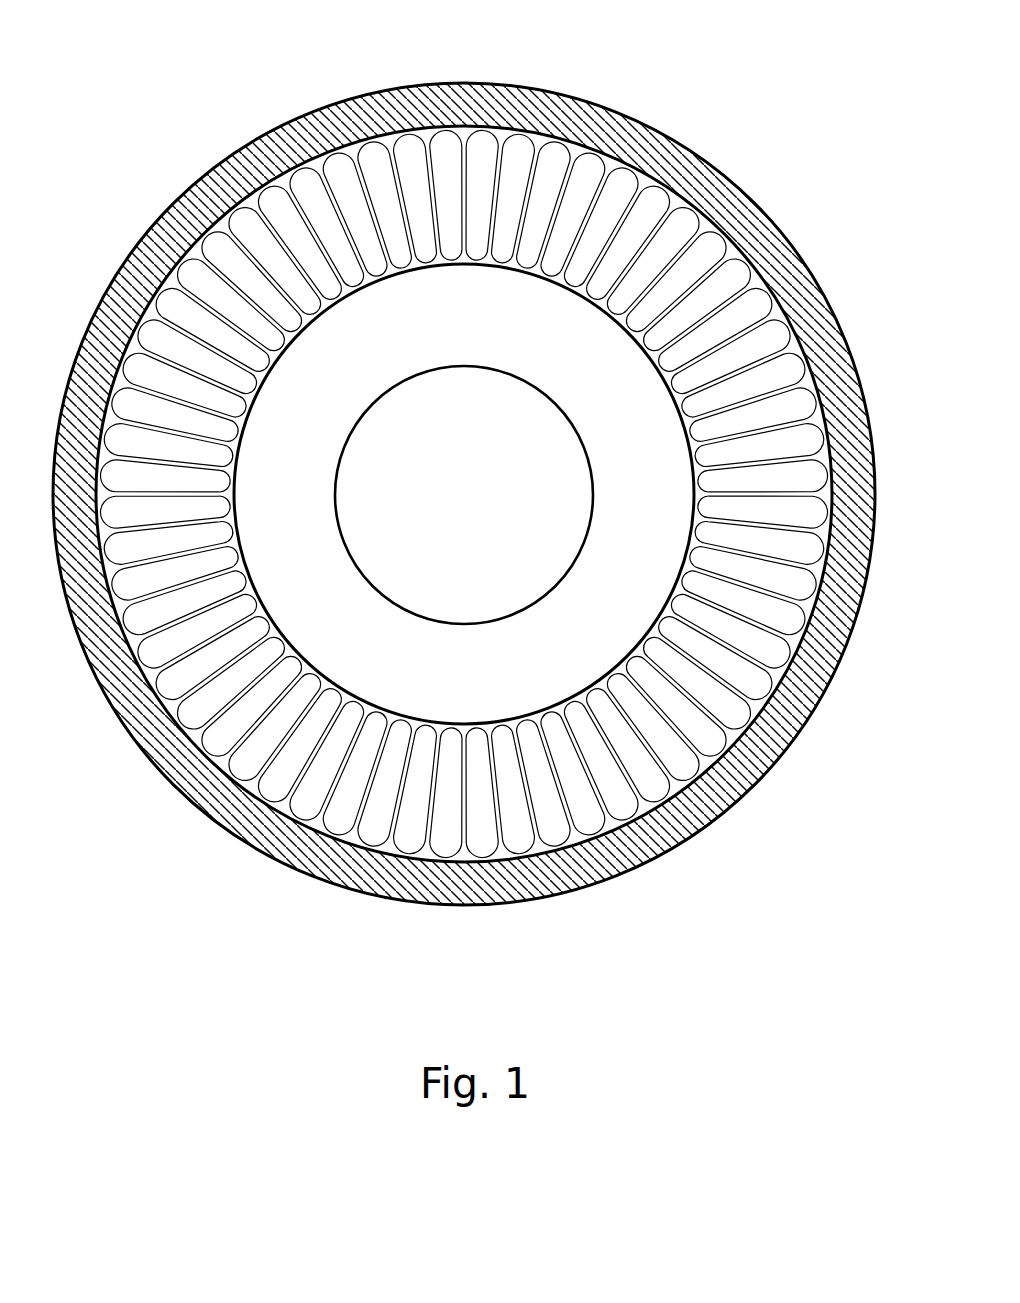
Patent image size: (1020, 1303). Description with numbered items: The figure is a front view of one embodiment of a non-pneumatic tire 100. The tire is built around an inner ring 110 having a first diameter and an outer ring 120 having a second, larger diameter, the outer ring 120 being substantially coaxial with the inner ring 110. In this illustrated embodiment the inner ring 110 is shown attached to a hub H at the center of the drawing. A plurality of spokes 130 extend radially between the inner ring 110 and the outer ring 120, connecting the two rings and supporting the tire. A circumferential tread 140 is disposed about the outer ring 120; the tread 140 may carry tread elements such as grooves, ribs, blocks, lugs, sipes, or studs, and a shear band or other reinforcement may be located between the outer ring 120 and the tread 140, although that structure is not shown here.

The non-pneumatic tire 100 is at (772, 120).
The inner ring 110 is at (361, 278).
The outer ring 120 is at (497, 122).
The spokes 130 is at (174, 352).
The circumferential tread 140 is at (632, 118).
The hub H is at (330, 627).